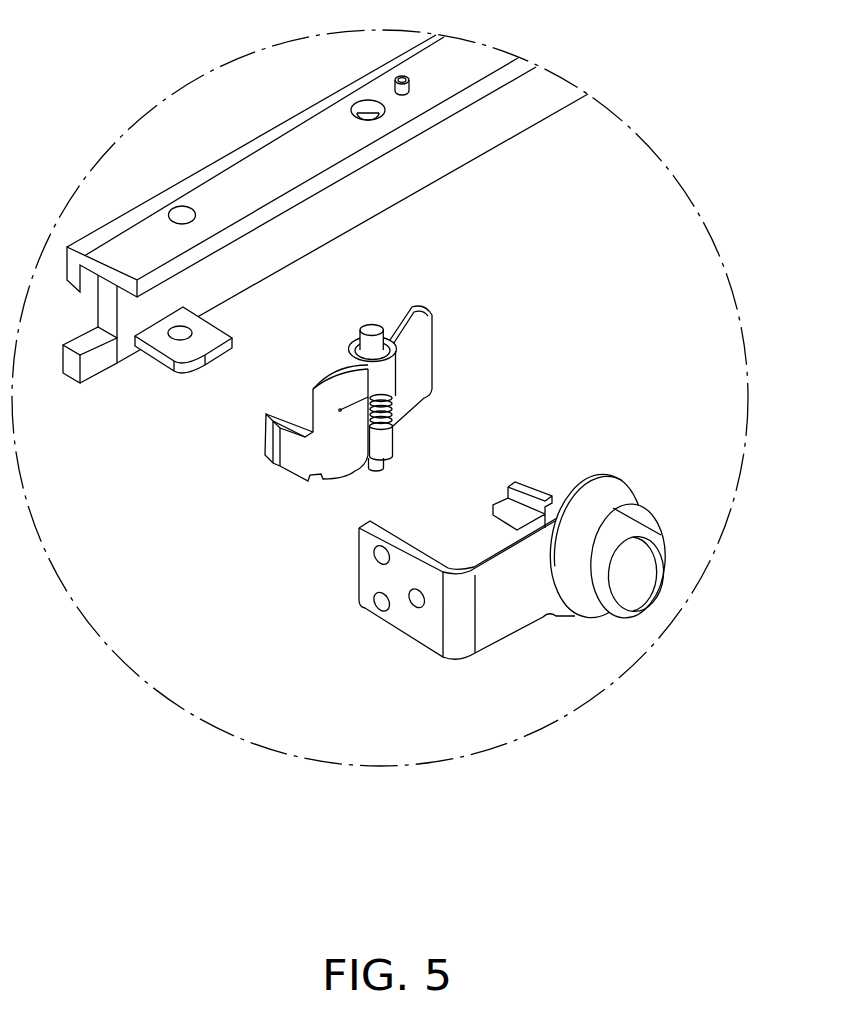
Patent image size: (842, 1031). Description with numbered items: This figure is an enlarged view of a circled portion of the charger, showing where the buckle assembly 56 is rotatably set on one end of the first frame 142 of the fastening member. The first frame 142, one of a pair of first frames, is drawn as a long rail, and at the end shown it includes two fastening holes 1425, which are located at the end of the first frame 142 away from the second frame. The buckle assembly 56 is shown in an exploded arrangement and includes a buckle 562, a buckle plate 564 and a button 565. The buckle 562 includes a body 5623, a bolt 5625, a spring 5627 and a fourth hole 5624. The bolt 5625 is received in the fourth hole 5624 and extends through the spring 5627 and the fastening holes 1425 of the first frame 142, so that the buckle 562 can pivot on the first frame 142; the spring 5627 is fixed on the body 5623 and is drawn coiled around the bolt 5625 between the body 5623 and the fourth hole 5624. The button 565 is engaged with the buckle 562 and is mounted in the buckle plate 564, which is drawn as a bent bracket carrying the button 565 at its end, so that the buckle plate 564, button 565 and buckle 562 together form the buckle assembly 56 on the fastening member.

The first frame 142 is at (255, 170).
The fastening hole 1425 is at (178, 208).
The buckle assembly 56 is at (303, 523).
The buckle 562 is at (437, 359).
The body 5623 is at (415, 347).
The fourth hole 5624 is at (352, 340).
The bolt 5625 is at (372, 323).
The spring 5627 is at (388, 405).
The buckle plate 564 is at (580, 483).
The button 565 is at (615, 525).